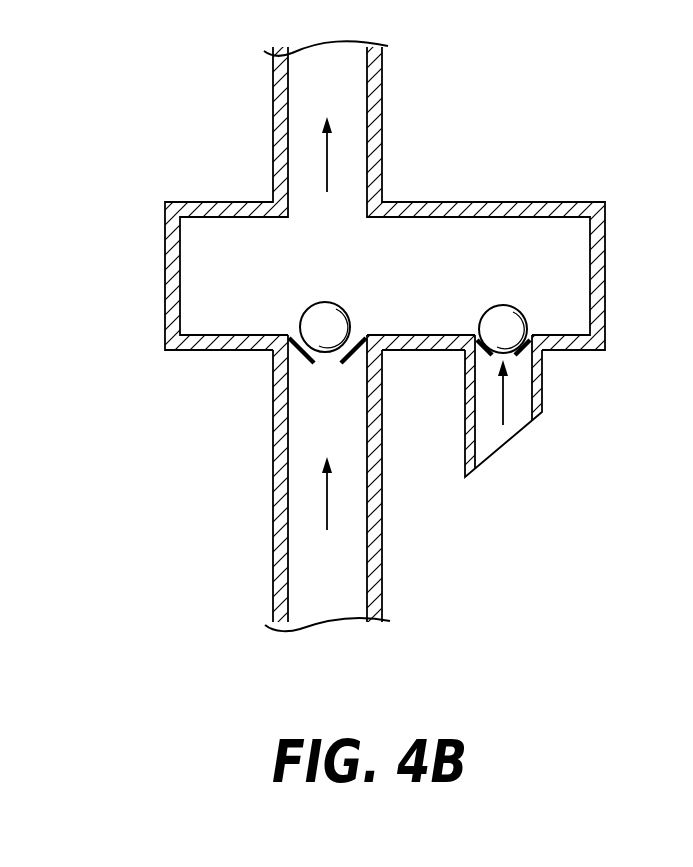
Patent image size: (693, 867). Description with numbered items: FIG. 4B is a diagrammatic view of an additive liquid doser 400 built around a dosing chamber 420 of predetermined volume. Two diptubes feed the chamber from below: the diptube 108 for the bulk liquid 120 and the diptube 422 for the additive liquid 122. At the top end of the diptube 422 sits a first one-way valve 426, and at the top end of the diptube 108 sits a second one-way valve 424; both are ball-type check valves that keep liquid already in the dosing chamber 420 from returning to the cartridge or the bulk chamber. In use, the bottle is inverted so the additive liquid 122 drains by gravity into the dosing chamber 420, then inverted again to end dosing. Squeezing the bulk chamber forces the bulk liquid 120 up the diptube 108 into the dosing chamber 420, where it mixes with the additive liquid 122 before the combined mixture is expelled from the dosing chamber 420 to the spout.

The additive liquid doser 400 is at (483, 109).
The dosing chamber 420 is at (165, 272).
The second one-way valve 424 is at (306, 319).
The first one-way valve 426 is at (523, 317).
The diptube 422 is at (542, 390).
The diptube 108 is at (274, 554).
The bulk liquid 120 is at (327, 153).
The additive liquid 122 is at (506, 397).